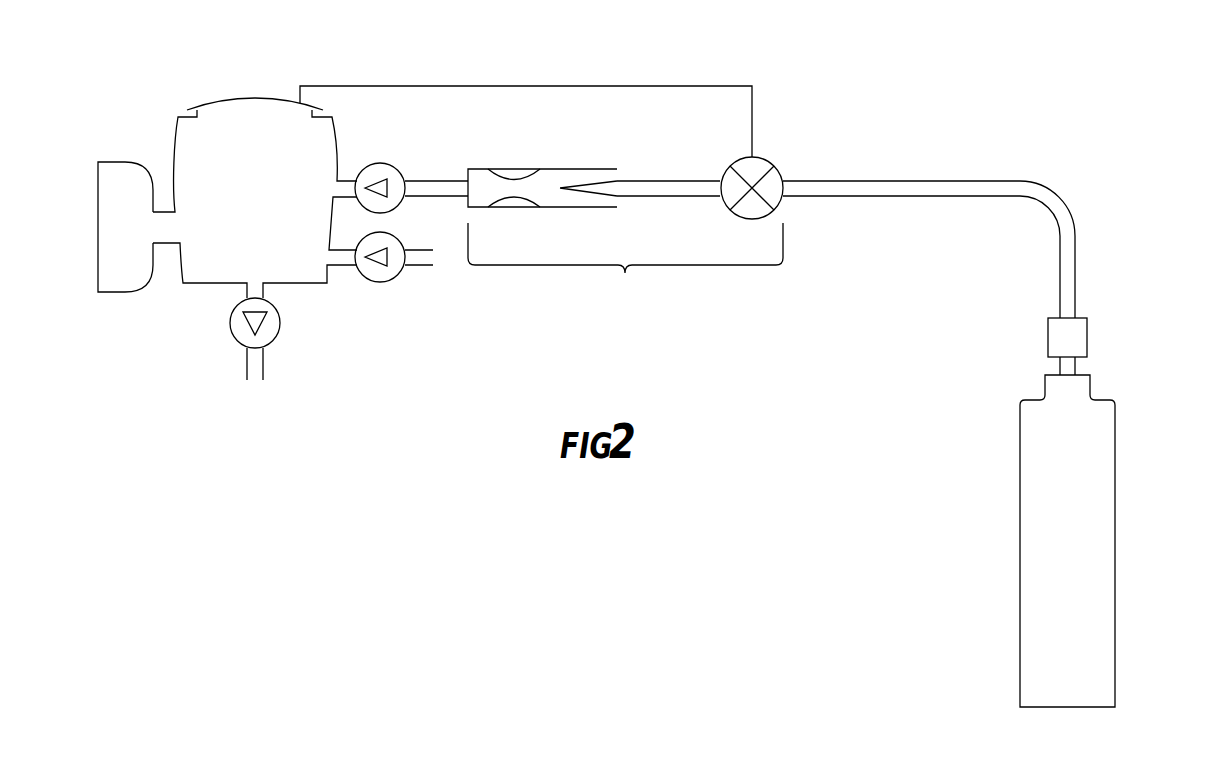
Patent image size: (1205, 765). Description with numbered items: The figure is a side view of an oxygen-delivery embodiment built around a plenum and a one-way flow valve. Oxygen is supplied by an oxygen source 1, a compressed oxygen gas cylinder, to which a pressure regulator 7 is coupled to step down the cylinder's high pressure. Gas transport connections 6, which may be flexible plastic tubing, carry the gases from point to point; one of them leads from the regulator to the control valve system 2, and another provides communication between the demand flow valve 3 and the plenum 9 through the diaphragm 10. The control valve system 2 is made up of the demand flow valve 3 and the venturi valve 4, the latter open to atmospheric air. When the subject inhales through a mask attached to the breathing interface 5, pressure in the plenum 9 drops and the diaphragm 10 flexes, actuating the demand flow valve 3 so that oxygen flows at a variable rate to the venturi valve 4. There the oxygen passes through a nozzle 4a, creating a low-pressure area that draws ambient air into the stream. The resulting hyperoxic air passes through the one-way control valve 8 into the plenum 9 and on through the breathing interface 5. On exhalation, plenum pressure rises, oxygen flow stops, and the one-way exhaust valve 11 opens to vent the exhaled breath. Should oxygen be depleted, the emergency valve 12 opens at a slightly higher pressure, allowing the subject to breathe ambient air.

The oxygen source 1 is at (1098, 556).
The control valve system 2 is at (654, 216).
The demand flow valve 3 is at (783, 203).
The venturi valve 4 is at (522, 207).
The nozzle 4a is at (584, 182).
The breathing interface 5 is at (98, 215).
The gas transport connections 6 is at (460, 72).
The pressure regulator 7 is at (1047, 342).
The one-way control valve 8 is at (388, 165).
The plenum 9 is at (255, 204).
The diaphragm 10 is at (202, 103).
The exhaust valve 11 is at (235, 338).
The emergency valve 12 is at (382, 280).